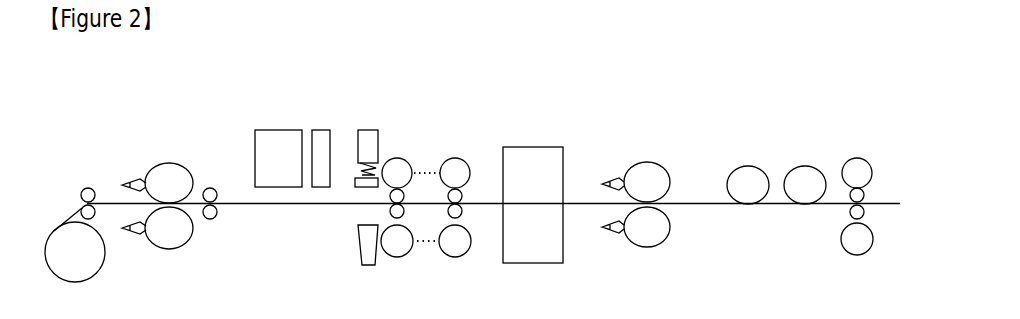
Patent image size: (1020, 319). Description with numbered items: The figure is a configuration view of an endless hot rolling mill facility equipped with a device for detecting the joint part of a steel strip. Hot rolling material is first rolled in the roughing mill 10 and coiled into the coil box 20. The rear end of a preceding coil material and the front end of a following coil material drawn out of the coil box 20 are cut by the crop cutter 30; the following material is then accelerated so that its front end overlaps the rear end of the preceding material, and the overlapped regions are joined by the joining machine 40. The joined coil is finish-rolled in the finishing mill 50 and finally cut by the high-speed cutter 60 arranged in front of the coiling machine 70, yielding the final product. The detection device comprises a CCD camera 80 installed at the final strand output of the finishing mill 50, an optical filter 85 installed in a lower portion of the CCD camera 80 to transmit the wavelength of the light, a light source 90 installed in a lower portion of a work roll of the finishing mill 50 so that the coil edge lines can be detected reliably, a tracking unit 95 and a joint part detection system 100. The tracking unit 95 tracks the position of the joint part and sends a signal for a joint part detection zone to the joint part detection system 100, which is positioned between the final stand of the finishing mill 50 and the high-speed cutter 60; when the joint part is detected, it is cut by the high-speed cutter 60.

The roughing mill 10 is at (835, 146).
The coil box 20 is at (728, 146).
The crop cutter 30 is at (595, 142).
The joining machine 40 is at (532, 147).
The finishing mill 50 is at (467, 140).
The high-speed cutter 60 is at (115, 143).
The winder 70 is at (43, 163).
The CCD camera 80 is at (365, 128).
The optical filter 85 is at (360, 187).
The light source 90 is at (358, 255).
The tracking unit 95 is at (322, 133).
The joint part detection system 100 is at (277, 137).